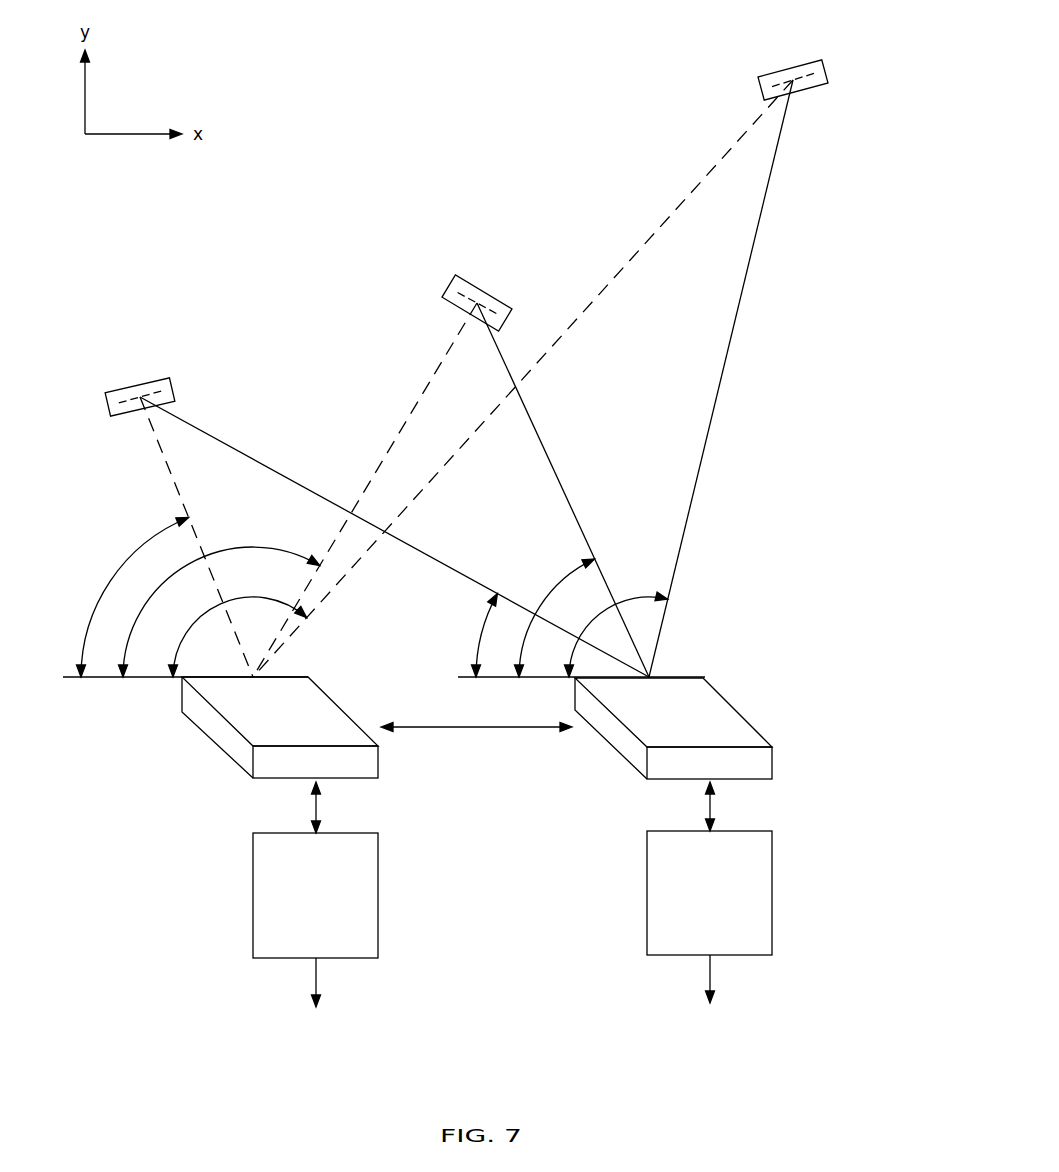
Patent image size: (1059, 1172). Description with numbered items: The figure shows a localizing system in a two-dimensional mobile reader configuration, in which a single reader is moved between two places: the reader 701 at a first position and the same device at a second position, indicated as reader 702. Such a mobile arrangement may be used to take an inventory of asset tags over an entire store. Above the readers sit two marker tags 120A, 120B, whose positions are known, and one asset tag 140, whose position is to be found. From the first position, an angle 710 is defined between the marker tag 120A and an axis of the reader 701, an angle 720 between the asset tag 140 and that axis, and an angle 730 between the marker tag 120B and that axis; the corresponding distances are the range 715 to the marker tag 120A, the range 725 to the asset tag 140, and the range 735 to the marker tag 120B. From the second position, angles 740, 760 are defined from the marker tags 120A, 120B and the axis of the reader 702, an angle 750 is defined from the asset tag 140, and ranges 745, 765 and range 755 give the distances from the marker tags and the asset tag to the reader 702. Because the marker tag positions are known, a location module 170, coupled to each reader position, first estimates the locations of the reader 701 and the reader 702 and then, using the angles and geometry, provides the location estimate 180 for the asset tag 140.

The marker tag 120A is at (132, 383).
The marker tag 120B is at (797, 65).
The asset tag 140 is at (478, 282).
The location module 170 is at (333, 931).
The location estimate 180 is at (513, 1018).
The reader 701 is at (252, 760).
The reader 702 is at (773, 763).
The angle 710 is at (84, 641).
The range 715 is at (165, 460).
The angle 720 is at (282, 549).
The range 725 is at (401, 430).
The angle 730 is at (197, 621).
The range 735 is at (700, 183).
The angle 740 is at (478, 641).
The range 745 is at (219, 439).
The angle 750 is at (577, 567).
The range 755 is at (542, 443).
The angle 760 is at (620, 603).
The range 765 is at (742, 300).